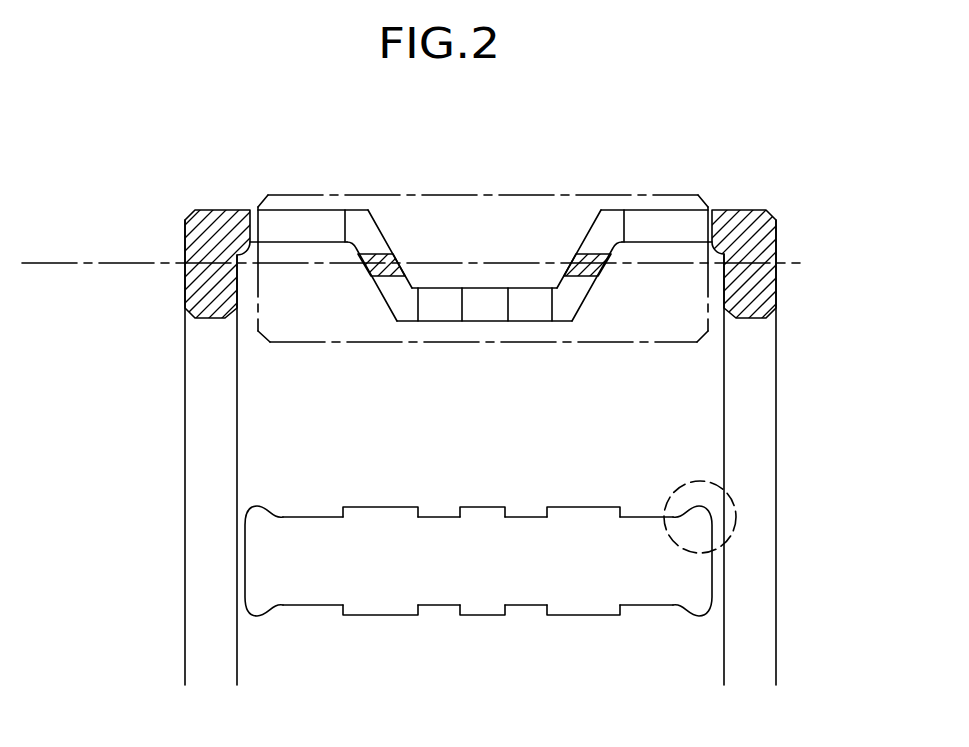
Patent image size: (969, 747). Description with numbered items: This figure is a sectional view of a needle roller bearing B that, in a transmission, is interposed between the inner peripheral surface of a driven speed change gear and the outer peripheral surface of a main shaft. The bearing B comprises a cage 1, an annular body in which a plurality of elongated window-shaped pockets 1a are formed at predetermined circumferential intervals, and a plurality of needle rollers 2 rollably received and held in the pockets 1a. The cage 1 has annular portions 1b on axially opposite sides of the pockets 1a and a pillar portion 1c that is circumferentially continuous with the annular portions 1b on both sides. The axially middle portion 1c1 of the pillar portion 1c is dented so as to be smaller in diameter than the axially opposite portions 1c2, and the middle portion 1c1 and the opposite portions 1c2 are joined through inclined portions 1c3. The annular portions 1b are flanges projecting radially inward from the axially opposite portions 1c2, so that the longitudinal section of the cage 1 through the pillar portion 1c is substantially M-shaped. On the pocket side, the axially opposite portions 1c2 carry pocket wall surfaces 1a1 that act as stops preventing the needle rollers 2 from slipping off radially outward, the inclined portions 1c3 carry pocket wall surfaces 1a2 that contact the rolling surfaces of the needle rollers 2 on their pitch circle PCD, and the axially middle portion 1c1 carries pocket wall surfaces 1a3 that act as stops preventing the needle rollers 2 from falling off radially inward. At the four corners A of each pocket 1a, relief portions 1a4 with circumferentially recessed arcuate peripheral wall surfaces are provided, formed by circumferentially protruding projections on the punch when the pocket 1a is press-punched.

The cage 1 is at (481, 411).
The pocket 1a is at (486, 571).
The pocket wall surface 1a1 is at (310, 512).
The pocket wall surface 1a2 is at (375, 253).
The pocket wall surface 1a3 is at (430, 512).
The relief portion 1a4 is at (255, 525).
The annular portion 1b is at (188, 302).
The pillar portion 1c is at (382, 300).
The axially middle portion 1c1 is at (482, 322).
The axially opposite portion 1c2 is at (282, 210).
The inclined portion 1c3 is at (390, 253).
The needle roller 2 is at (484, 260).
The corner of pocket A is at (736, 492).
The needle roller bearing B is at (162, 183).
The pitch circle PCD is at (27, 270).